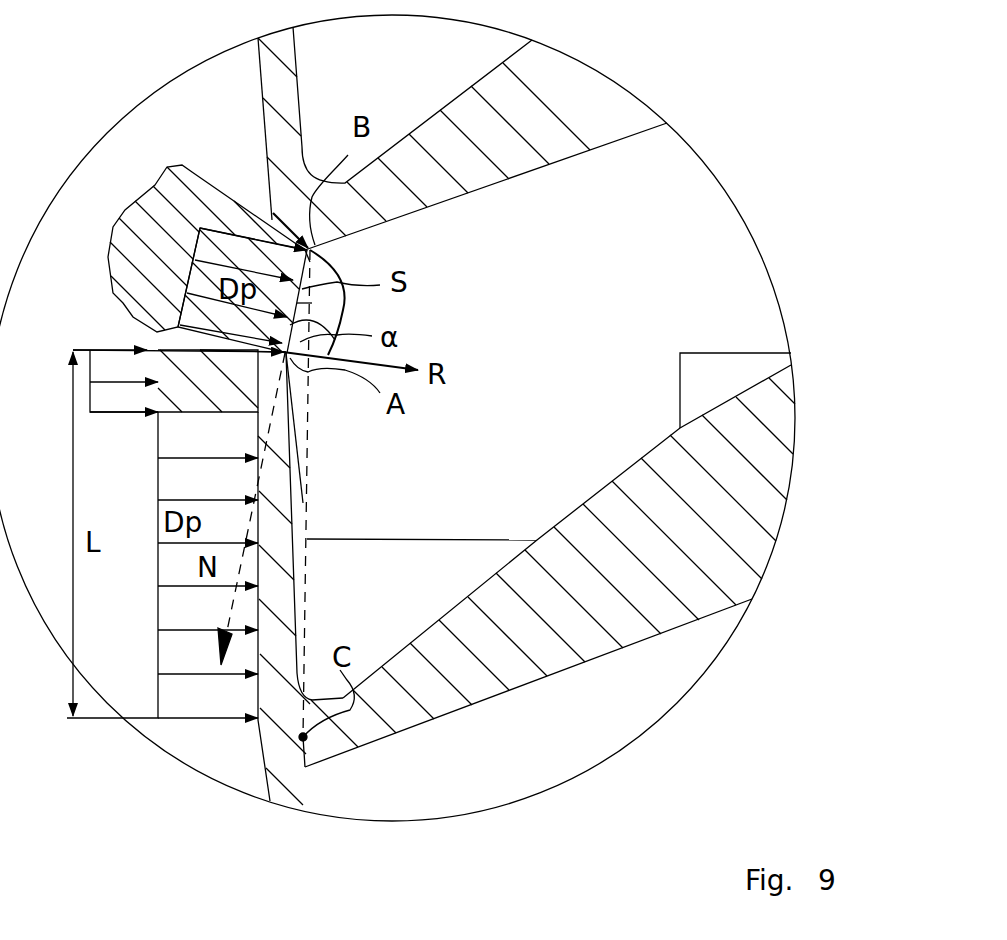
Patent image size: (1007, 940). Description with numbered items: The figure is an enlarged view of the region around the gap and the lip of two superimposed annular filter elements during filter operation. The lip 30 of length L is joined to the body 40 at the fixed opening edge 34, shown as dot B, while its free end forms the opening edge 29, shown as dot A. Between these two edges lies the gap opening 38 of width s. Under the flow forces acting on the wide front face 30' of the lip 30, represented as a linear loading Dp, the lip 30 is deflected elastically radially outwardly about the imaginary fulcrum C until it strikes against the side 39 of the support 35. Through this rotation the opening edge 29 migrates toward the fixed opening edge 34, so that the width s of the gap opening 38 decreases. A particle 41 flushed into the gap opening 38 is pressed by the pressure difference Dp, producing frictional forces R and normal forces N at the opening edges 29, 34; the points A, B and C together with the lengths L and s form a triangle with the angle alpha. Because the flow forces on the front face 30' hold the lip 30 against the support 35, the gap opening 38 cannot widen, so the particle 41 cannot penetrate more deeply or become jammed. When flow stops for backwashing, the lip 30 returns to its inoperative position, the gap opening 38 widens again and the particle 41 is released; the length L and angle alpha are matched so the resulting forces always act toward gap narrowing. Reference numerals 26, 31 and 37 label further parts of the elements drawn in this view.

The housing 26 is at (717, 230).
The opening edge 29 is at (286, 353).
The lip 30 is at (225, 763).
The front face 30' is at (192, 740).
The support wall 31 is at (190, 402).
The fixed opening edge 34 is at (313, 250).
The support 35 is at (412, 522).
The body 37 is at (370, 648).
The gap opening 38 is at (300, 303).
The side of the support 39 is at (297, 502).
The body 40 is at (630, 633).
The particle 41 is at (160, 218).